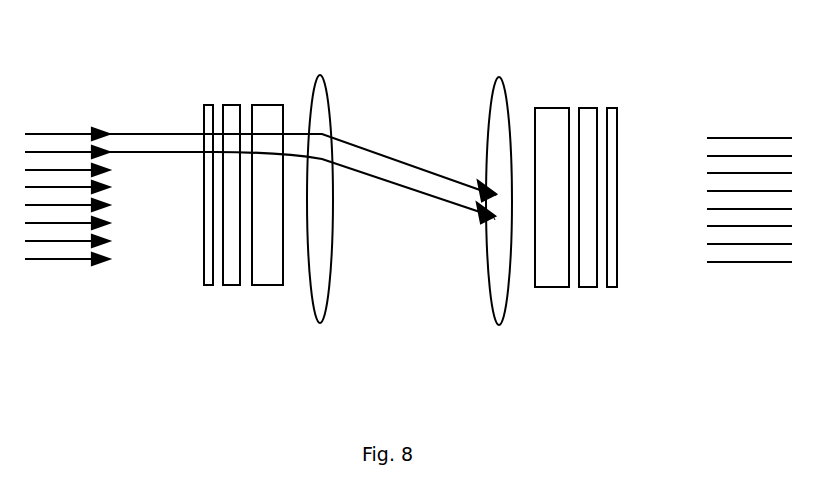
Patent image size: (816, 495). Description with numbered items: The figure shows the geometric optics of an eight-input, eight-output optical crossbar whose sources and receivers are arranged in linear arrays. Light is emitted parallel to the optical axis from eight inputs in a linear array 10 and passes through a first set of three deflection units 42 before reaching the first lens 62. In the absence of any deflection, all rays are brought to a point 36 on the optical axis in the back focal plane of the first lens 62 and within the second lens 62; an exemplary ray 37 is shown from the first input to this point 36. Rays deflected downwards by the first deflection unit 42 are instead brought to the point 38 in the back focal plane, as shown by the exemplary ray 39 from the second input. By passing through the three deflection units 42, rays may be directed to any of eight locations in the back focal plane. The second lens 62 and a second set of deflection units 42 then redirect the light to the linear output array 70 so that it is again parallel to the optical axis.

The linear array 10 is at (67, 225).
The deflection unit 42 is at (215, 291).
The lens 62 is at (408, 223).
The ray 37 is at (302, 165).
The ray 39 is at (302, 187).
The point 36 is at (496, 196).
The point 38 is at (494, 220).
The linear output array 70 is at (749, 233).